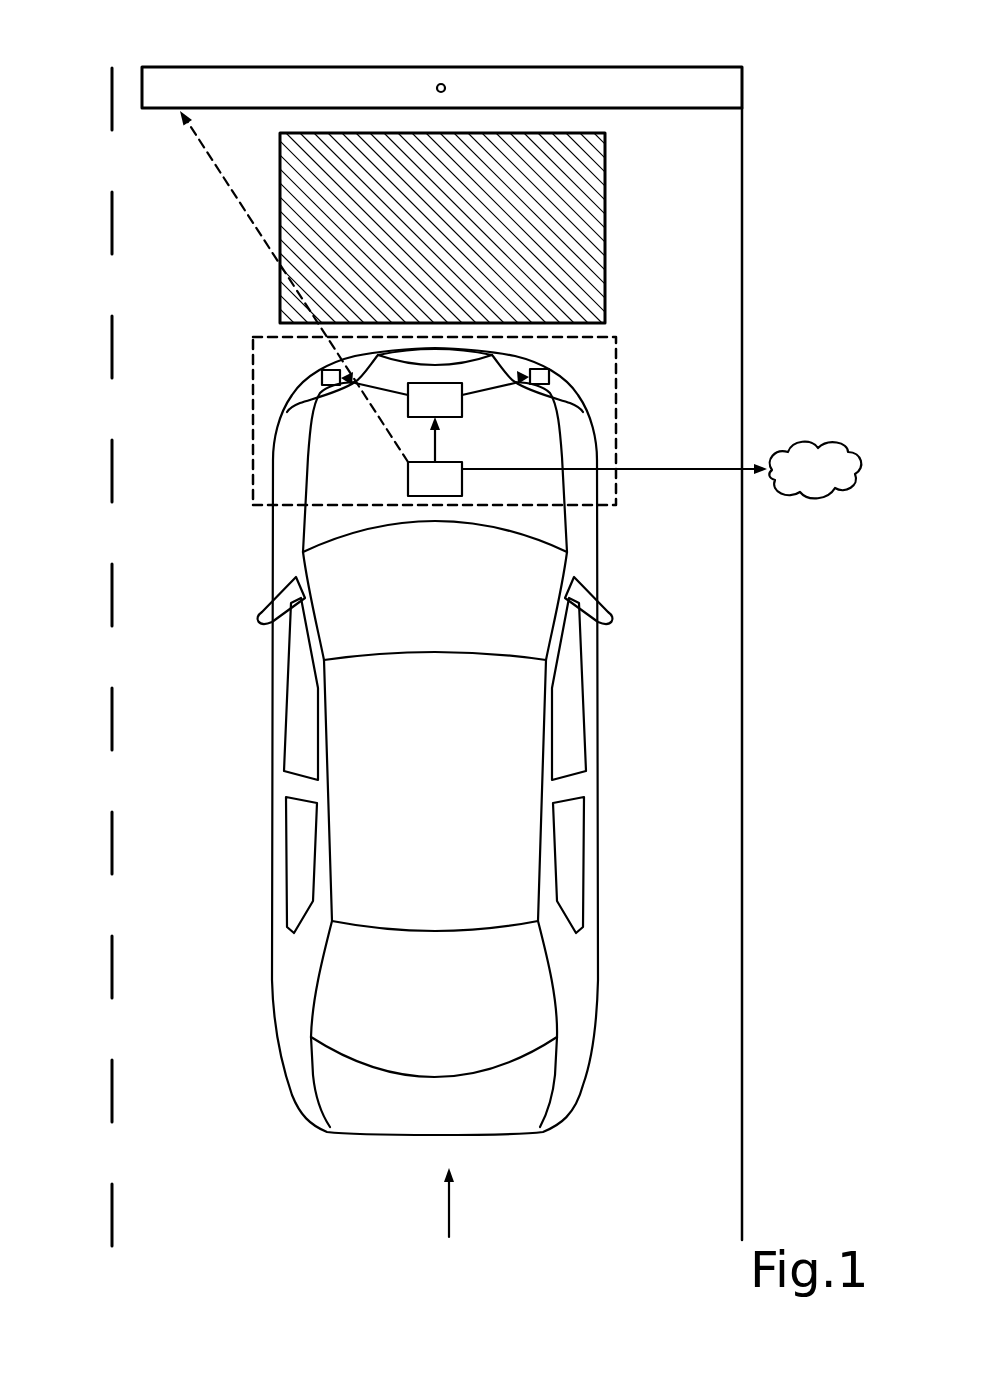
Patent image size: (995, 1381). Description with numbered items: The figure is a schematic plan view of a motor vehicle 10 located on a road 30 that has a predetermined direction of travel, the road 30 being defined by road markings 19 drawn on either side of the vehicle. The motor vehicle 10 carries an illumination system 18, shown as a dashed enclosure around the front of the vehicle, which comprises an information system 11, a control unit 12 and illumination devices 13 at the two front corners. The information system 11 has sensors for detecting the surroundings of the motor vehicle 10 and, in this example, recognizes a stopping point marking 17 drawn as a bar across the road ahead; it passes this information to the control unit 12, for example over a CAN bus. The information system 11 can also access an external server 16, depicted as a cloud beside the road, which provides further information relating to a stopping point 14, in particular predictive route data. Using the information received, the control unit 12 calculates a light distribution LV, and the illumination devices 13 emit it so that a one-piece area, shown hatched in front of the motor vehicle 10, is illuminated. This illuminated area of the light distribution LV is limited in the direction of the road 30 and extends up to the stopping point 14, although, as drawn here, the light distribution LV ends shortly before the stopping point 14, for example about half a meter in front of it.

The motor vehicle 10 is at (594, 1047).
The information system 11 is at (462, 486).
The control unit 12 is at (462, 400).
The illumination device 13 is at (322, 378).
The stopping point 14 is at (443, 82).
The external server 16 is at (815, 500).
The stopping point marking 17 is at (604, 88).
The illumination system 18 is at (570, 403).
The road markings 19 is at (742, 617).
The road 30 is at (450, 1208).
The light distribution LV is at (605, 212).